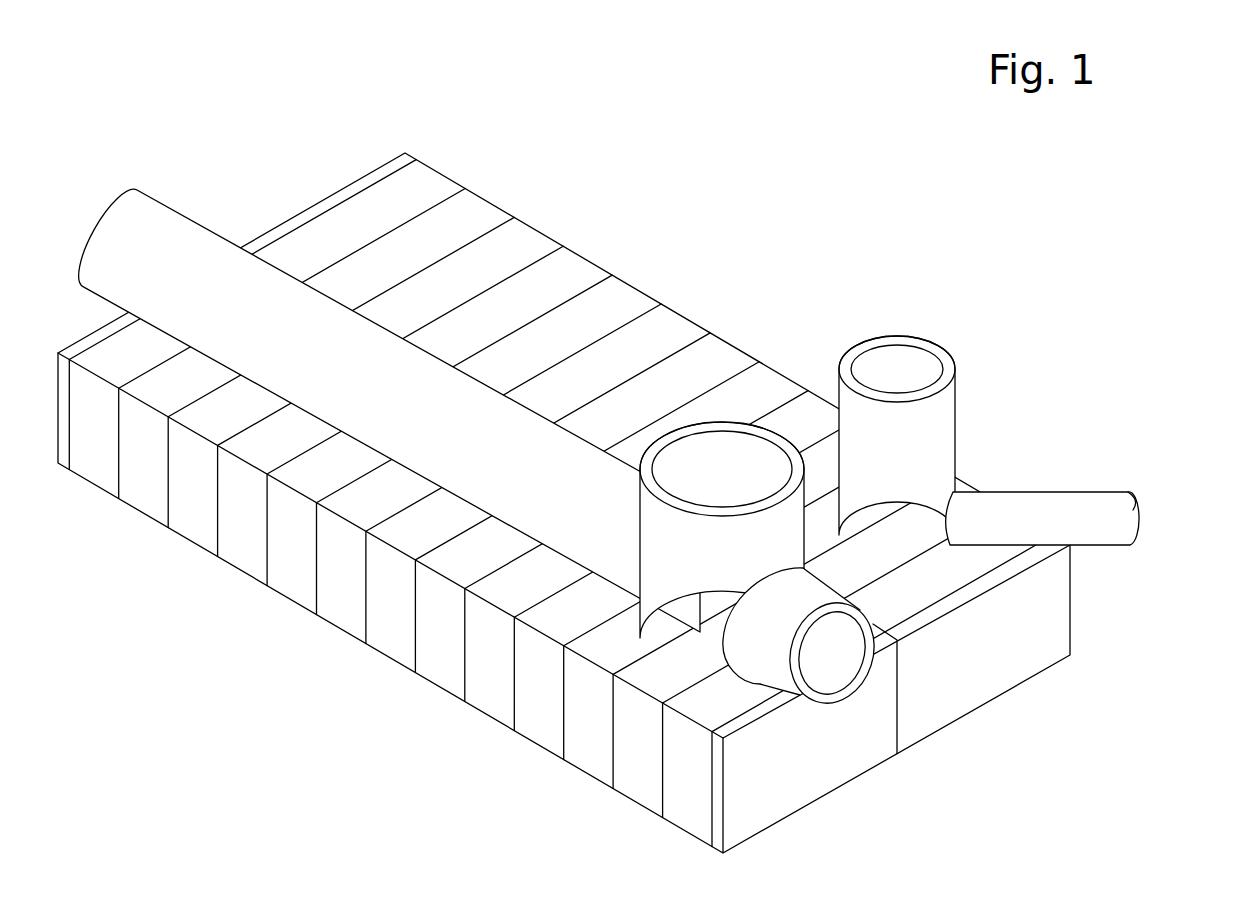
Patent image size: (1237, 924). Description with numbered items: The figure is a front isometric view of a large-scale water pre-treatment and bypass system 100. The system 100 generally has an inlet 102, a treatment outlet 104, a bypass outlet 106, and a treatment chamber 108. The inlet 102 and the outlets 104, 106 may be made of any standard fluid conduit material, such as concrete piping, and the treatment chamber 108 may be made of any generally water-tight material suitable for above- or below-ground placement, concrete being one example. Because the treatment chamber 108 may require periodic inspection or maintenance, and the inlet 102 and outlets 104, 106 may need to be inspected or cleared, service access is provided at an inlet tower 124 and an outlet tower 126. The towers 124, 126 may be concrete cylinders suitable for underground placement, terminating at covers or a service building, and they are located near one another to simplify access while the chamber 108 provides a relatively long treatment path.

The water pre-treatment and bypass system 100 is at (632, 500).
The inlet 102 is at (100, 212).
The treatment outlet 104 is at (1112, 500).
The bypass outlet 106 is at (825, 677).
The treatment chamber 108 is at (640, 782).
The inlet tower 124 is at (667, 557).
The outlet tower 126 is at (940, 407).